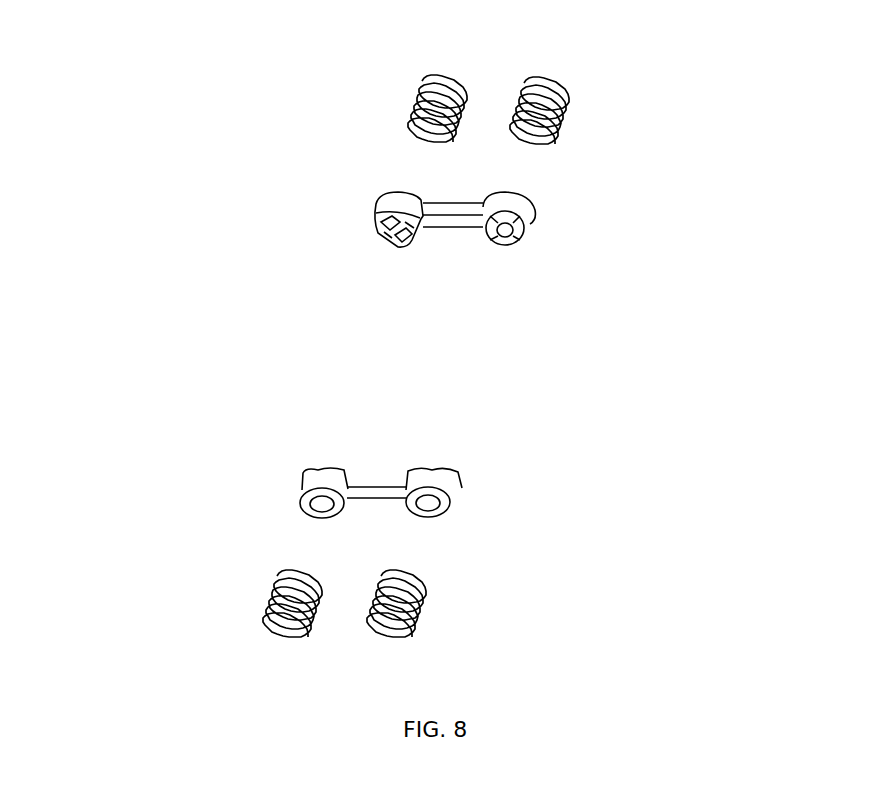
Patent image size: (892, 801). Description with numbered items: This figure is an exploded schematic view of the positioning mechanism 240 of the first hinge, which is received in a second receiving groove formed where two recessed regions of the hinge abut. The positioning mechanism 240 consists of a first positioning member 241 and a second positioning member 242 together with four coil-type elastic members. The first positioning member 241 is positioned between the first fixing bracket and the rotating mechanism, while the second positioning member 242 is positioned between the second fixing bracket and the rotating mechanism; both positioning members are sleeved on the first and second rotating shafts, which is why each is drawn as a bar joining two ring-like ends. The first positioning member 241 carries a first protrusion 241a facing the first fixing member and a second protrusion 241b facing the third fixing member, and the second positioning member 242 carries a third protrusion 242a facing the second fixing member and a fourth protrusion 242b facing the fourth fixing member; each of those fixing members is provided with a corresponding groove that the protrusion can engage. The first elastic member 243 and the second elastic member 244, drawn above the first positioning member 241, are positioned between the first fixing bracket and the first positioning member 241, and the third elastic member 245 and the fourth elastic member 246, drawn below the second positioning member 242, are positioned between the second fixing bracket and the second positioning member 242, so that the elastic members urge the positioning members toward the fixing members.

The positioning mechanism 240 is at (310, 37).
The first positioning member 241 is at (460, 228).
The first protrusion 241a is at (380, 228).
The second protrusion 241b is at (507, 243).
The second positioning member 242 is at (403, 469).
The third protrusion 242a is at (330, 470).
The fourth protrusion 242b is at (455, 472).
The first elastic member 243 is at (412, 142).
The second elastic member 244 is at (557, 123).
The third elastic member 245 is at (267, 622).
The fourth elastic member 246 is at (407, 630).